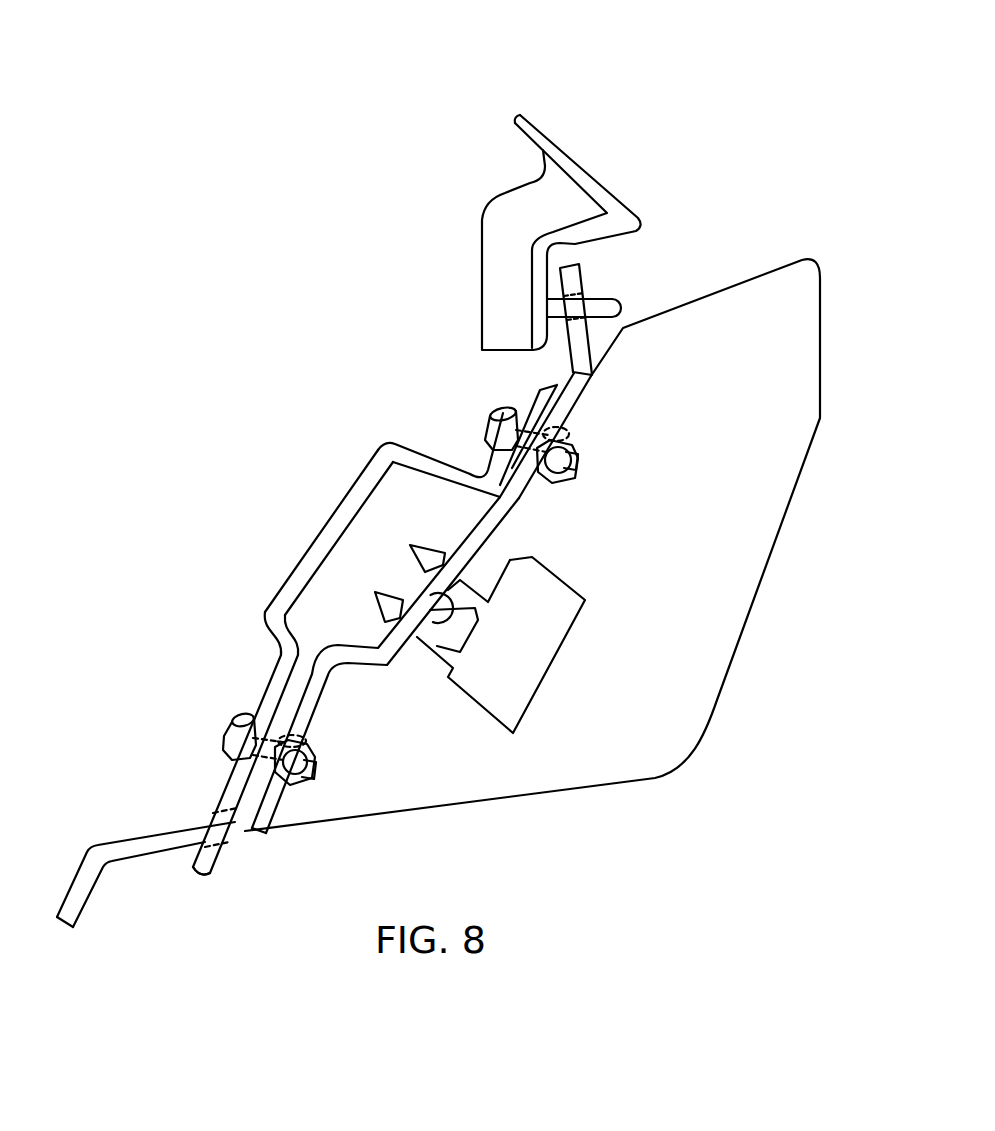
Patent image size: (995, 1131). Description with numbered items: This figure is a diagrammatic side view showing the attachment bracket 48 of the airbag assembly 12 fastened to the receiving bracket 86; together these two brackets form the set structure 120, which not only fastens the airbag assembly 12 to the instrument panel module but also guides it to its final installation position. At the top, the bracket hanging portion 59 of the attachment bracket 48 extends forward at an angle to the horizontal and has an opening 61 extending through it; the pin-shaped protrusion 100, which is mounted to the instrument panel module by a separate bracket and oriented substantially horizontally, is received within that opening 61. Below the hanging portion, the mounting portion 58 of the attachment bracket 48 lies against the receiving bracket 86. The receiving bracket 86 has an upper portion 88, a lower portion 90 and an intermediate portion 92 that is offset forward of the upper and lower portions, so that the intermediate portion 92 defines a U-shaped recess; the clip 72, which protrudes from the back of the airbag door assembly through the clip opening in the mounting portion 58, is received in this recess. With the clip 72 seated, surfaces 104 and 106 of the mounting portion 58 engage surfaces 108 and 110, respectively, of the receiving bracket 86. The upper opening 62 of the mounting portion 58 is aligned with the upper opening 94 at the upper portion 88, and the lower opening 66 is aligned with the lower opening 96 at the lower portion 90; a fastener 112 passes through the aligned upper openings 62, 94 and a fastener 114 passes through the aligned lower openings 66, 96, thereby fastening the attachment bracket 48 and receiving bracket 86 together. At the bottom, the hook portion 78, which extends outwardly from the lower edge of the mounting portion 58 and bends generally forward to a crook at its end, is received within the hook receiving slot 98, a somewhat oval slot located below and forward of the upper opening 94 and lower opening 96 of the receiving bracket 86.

The set structure 120 is at (757, 35).
The bracket hanging portion 59 is at (570, 262).
The opening 61 is at (556, 296).
The protrusion 100 is at (622, 300).
The surface 108 is at (570, 402).
The airbag assembly 12 is at (718, 302).
The attachment bracket 48 is at (512, 519).
The mounting portion 58 is at (324, 686).
The receiving bracket 86 is at (312, 540).
The intermediate portion 92 is at (358, 482).
The upper opening 94 is at (492, 458).
The lower portion 90 is at (278, 668).
The lower opening 96 is at (252, 720).
The upper portion 88 is at (542, 396).
The fastener 112 is at (503, 430).
The upper opening 62 is at (566, 437).
The surface 104 is at (504, 496).
The clip 72 is at (428, 553).
The hook portion 78 is at (116, 845).
The fastener 114 is at (224, 742).
The lower opening 66 is at (308, 740).
The surface 106 is at (286, 705).
The surface 110 is at (240, 824).
The hook receiving slot 98 is at (230, 840).